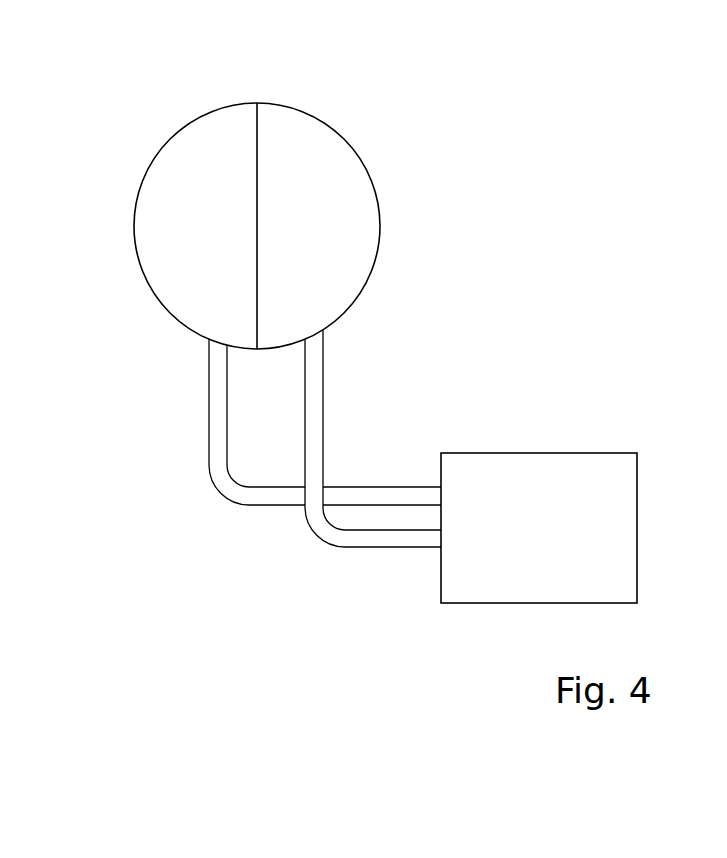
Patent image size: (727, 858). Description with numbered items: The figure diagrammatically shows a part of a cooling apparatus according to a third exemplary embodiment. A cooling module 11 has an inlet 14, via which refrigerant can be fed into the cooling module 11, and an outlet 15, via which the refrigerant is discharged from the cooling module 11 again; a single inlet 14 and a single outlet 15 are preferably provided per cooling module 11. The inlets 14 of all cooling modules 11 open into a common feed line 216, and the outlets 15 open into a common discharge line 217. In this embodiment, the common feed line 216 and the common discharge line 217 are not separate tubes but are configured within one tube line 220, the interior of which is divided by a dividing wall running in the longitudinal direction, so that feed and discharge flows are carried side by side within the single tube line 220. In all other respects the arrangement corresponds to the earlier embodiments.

The cooling module 11 is at (539, 528).
The inlet 14 is at (315, 416).
The outlet 15 is at (218, 427).
The common feed line 216 is at (342, 192).
The common discharge line 217 is at (173, 193).
The tube line 220 is at (265, 102).